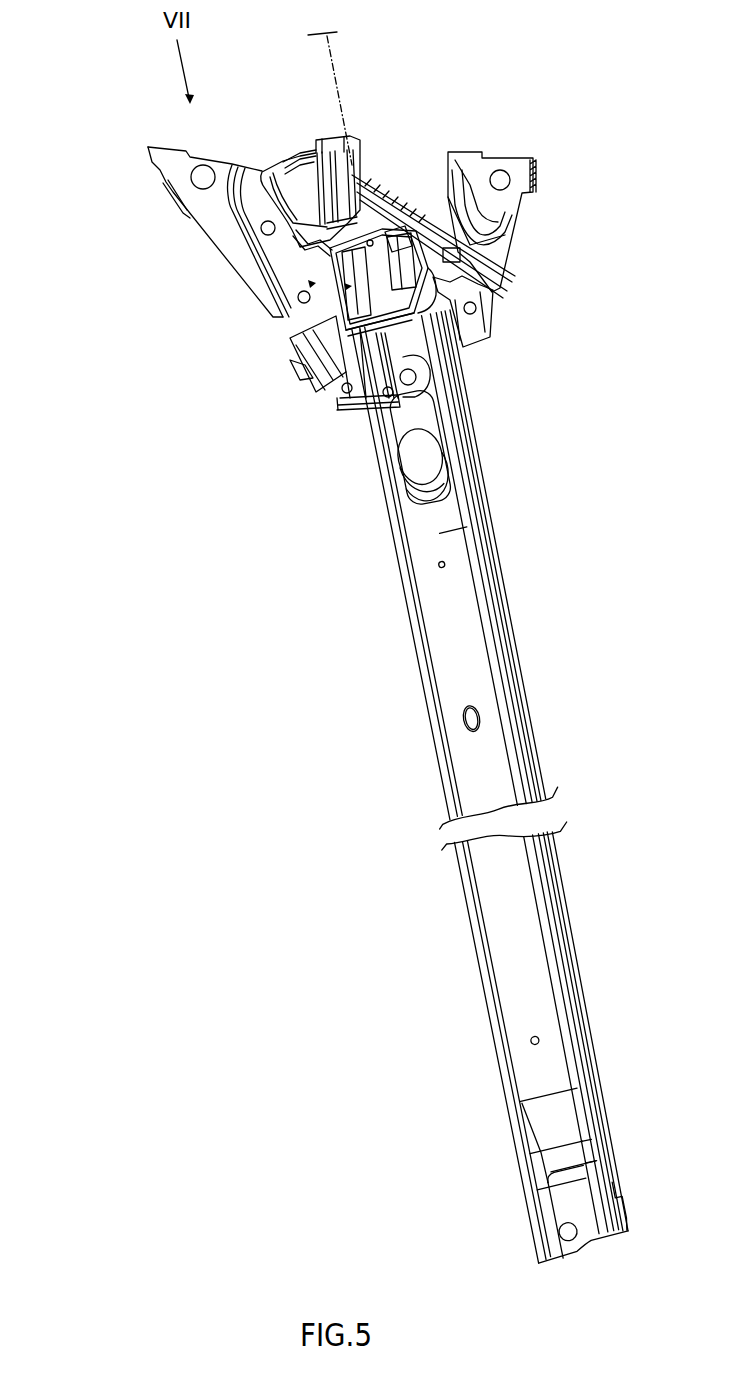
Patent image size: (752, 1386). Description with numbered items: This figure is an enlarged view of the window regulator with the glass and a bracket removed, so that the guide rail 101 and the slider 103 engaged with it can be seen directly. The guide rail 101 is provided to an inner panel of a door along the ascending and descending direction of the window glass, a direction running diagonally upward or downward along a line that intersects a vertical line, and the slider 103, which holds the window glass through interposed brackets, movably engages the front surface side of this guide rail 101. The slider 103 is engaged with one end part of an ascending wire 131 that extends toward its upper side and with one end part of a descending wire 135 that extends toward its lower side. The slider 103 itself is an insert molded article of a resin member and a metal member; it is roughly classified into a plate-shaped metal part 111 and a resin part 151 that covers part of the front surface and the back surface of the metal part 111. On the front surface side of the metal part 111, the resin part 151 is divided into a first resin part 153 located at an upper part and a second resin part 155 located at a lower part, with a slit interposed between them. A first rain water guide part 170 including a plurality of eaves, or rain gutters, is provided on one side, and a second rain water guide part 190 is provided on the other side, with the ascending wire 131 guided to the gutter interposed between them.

The guide rail 101 is at (517, 648).
The slider 103 is at (110, 308).
The metal part 111 is at (218, 265).
The ascending wire 131 is at (331, 53).
The descending wire 135 is at (470, 458).
The resin part 151 is at (170, 344).
The first resin part 153 is at (318, 286).
The second resin part 155 is at (294, 376).
The first rain water guide part 170 is at (283, 167).
The second rain water guide part 190 is at (403, 182).